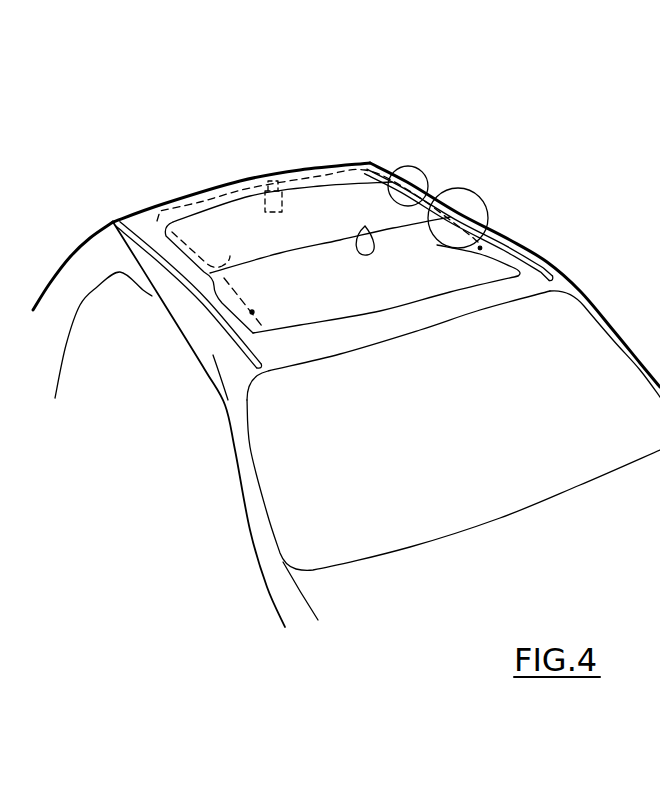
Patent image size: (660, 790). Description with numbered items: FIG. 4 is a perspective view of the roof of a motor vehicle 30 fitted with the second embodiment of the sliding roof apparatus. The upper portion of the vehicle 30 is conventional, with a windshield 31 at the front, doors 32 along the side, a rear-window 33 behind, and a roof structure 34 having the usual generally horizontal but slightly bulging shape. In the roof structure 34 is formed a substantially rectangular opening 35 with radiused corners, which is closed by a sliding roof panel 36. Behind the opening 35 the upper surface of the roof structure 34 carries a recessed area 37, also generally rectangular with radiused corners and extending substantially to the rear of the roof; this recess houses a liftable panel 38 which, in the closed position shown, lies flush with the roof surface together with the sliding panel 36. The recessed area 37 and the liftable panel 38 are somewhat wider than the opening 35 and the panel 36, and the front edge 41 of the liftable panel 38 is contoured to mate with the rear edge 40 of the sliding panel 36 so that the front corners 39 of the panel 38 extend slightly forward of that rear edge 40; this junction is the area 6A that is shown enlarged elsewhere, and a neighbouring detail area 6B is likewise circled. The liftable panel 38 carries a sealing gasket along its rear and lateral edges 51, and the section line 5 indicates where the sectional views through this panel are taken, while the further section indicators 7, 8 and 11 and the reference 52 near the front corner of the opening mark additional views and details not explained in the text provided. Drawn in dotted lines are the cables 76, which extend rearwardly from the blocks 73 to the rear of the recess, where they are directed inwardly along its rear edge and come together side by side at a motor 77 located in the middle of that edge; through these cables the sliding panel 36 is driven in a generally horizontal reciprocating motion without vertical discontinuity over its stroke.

The vehicle 30 is at (586, 528).
The windshield 31 is at (450, 444).
The doors 32 is at (194, 523).
The rear-window 33 is at (89, 226).
The roof structure 34 is at (533, 282).
The opening 35 is at (385, 311).
The sliding roof panel 36 is at (389, 301).
The recessed area 37 is at (204, 197).
The liftable panel 38 is at (326, 234).
The front corners 39 is at (207, 320).
The rear edge 40 is at (285, 243).
The front edge 41 is at (358, 232).
The rear and lateral edges 51 is at (177, 253).
The panel corner 52 is at (252, 334).
The blocks 73 is at (252, 312).
The cables 76 is at (209, 244).
The motor 77 is at (287, 180).
The section line 5- 5 is at (378, 149).
The area 6A is at (484, 200).
The detail circle 6B is at (412, 166).
The section line 7 is at (370, 192).
The section line 8 is at (442, 248).
The section line 11 is at (291, 227).